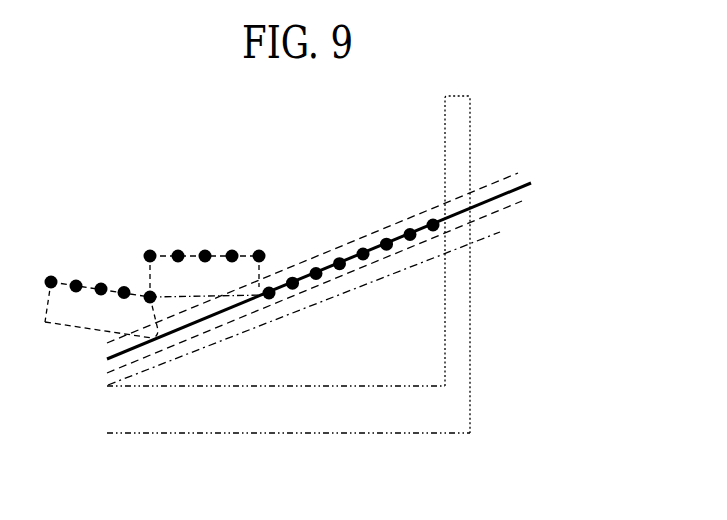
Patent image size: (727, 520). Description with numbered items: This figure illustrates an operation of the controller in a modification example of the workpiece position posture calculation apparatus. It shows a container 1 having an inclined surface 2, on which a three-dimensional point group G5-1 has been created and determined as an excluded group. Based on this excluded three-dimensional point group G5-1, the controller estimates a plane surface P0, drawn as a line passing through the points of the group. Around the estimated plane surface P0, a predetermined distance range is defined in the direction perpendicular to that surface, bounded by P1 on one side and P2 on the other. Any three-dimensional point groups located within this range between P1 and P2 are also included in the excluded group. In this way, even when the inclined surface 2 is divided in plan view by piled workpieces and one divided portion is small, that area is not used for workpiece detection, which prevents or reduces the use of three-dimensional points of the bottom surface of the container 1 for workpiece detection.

The container 1 is at (471, 338).
The inclined surface 2 is at (340, 294).
The plane surface P0 is at (522, 181).
The distance range boundary P1 is at (518, 174).
The distance range boundary P2 is at (502, 211).
The three-dimensional point group G5-1 is at (437, 206).